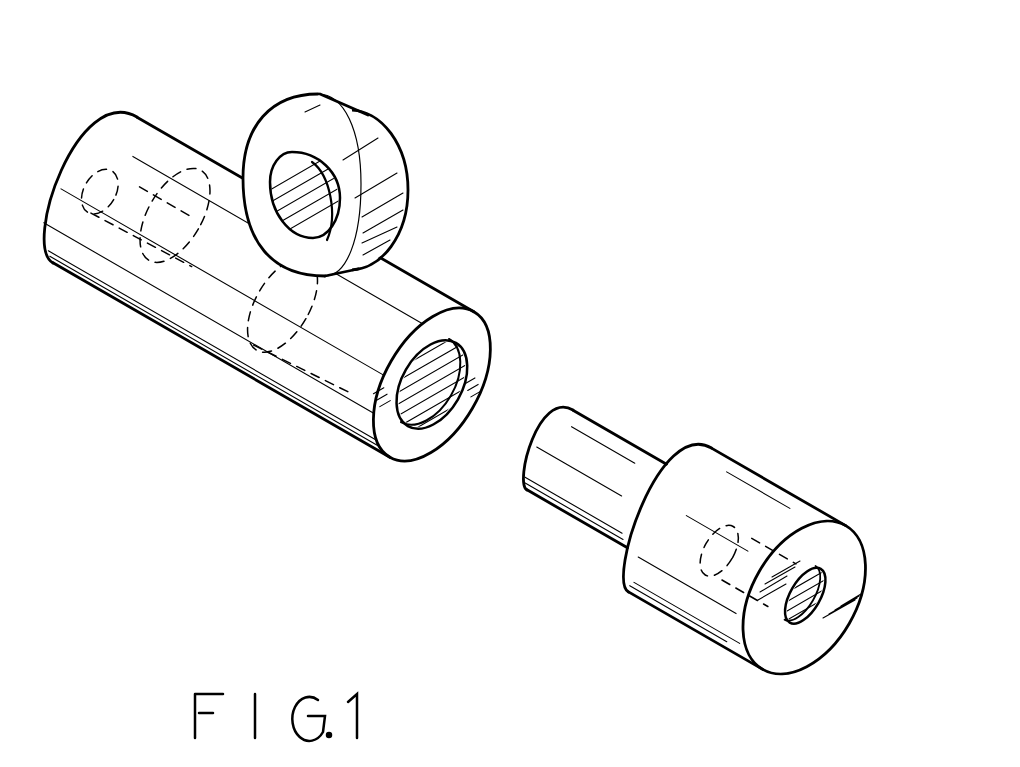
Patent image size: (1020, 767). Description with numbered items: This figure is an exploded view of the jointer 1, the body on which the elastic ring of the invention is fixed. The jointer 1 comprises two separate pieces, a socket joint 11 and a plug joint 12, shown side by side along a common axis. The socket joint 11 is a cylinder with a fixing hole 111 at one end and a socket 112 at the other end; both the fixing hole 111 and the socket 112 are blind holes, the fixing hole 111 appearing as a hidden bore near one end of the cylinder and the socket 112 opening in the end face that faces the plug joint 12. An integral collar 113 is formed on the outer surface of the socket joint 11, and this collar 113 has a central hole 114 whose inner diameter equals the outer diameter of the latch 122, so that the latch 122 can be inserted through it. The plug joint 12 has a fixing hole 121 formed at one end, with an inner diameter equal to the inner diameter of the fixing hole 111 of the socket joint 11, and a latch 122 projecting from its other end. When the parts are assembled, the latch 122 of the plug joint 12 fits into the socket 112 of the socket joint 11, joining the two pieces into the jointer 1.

The jointer 1 is at (463, 371).
The socket joint 11 is at (215, 340).
The fixing hole 111 is at (105, 178).
The socket 112 is at (425, 412).
The collar 113 is at (367, 132).
The central hole 114 is at (320, 203).
The plug joint 12 is at (708, 562).
The fixing hole 121 is at (807, 612).
The latch 122 is at (555, 498).